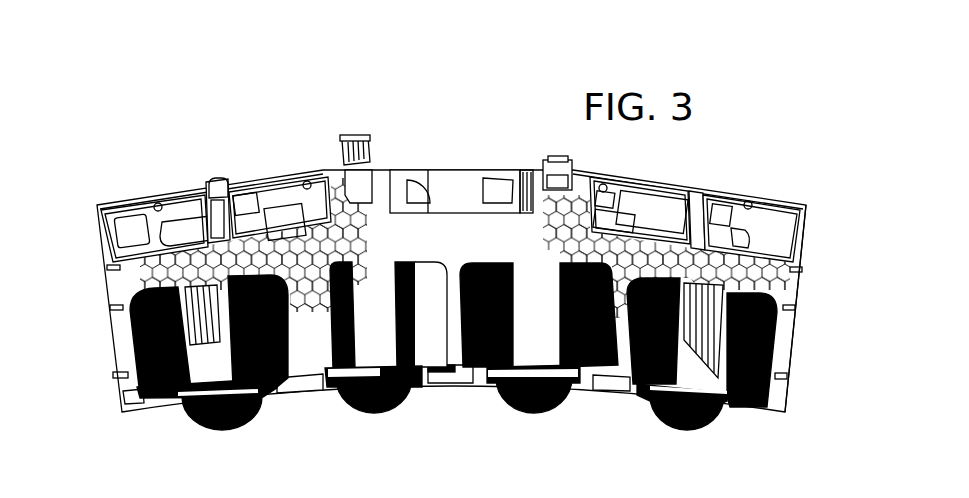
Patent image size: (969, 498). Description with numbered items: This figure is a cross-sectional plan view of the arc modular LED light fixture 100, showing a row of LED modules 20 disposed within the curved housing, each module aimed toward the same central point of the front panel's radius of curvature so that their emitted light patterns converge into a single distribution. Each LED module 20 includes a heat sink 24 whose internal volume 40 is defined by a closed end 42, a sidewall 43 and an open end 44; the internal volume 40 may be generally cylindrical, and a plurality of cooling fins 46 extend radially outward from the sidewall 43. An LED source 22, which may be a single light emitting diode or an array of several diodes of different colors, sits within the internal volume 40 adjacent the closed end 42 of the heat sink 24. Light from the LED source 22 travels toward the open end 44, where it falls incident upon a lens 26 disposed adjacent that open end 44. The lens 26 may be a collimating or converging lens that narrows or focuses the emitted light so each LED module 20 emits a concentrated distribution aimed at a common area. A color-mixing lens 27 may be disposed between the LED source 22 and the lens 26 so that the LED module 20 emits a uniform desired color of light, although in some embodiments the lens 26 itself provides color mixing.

The fixture 100 is at (135, 150).
The LED module 20 is at (793, 333).
The LED source 22 is at (716, 278).
The heat sink 24 is at (783, 364).
The lens 26 is at (722, 423).
The color-mixing lens 27 is at (645, 402).
The internal volume 40 is at (160, 400).
The closed end 42 is at (160, 275).
The sidewall 43 is at (302, 290).
The open end 44 is at (227, 372).
The cooling fins 46 is at (195, 308).